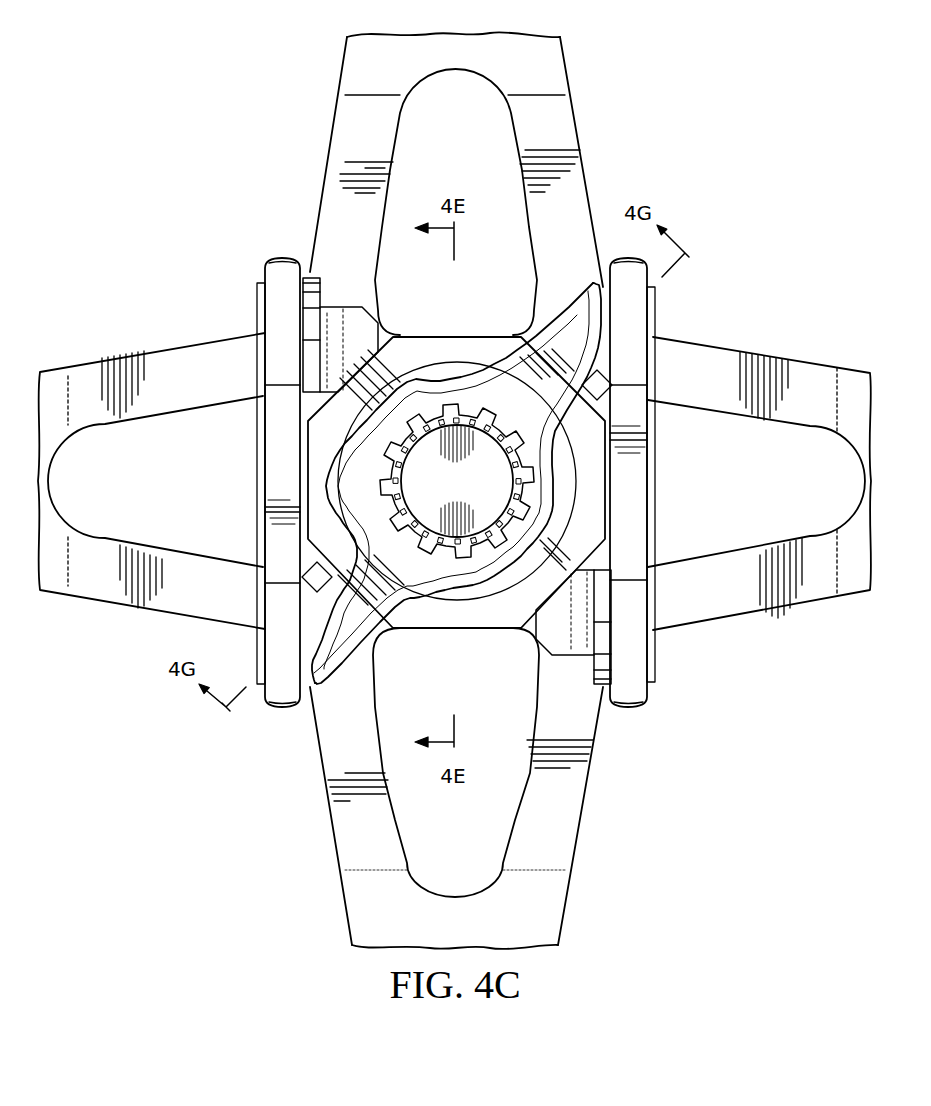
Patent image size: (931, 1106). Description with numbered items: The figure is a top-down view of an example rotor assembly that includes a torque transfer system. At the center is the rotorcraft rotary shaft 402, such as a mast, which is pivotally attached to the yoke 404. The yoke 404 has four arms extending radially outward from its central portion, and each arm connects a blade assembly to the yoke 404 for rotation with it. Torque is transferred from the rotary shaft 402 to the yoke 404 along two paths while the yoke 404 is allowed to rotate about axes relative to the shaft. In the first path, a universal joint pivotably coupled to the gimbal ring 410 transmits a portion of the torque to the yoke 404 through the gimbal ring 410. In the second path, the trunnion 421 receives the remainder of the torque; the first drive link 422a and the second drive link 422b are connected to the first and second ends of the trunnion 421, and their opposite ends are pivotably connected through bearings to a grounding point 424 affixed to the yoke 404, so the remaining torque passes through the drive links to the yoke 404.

The rotorcraft rotary shaft 402 is at (438, 493).
The yoke 404 is at (330, 153).
The gimbal ring 410 is at (473, 333).
The trunnion 421 is at (412, 605).
The first drive link 422a is at (647, 480).
The second drive link 422b is at (263, 473).
The grounding point 424 is at (335, 307).